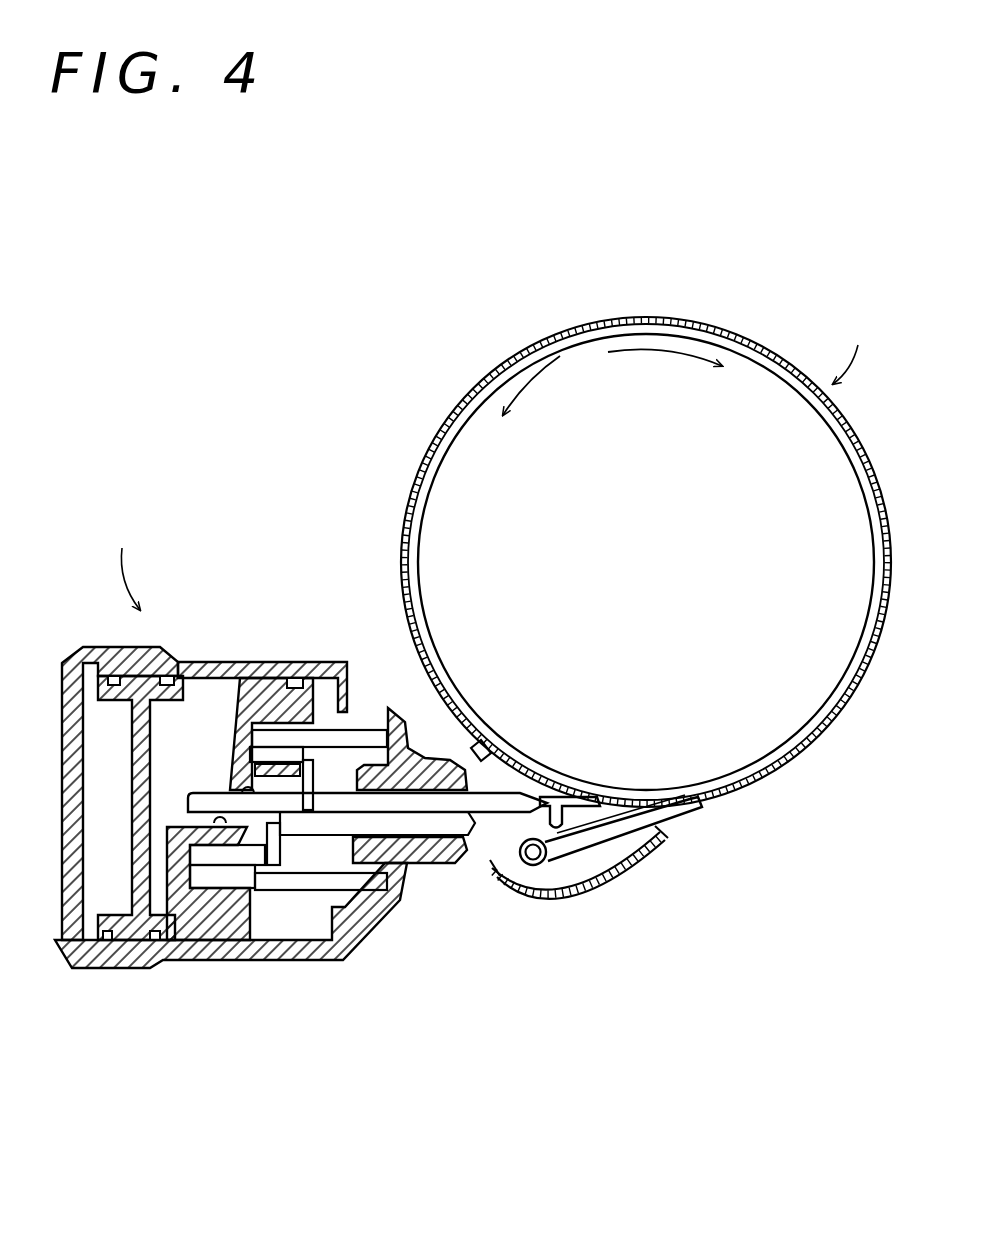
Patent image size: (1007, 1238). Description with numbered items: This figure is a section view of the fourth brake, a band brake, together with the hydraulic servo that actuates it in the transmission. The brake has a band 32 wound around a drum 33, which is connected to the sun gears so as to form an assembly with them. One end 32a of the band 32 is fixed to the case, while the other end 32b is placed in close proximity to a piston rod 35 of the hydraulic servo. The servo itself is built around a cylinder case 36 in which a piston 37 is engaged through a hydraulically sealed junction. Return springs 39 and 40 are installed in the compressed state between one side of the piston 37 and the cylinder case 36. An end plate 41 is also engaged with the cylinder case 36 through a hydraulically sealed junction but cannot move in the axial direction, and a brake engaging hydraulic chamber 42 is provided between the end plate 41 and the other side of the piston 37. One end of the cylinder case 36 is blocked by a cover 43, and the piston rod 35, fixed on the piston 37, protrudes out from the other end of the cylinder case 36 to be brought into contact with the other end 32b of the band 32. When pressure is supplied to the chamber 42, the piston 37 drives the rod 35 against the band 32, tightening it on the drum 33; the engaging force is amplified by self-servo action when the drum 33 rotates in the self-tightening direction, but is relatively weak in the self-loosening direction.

The band 32 is at (748, 782).
The one end of the band 32a is at (548, 862).
The other end of the band 32b is at (587, 797).
The drum 33 is at (838, 446).
The piston rod 35 is at (480, 806).
The cylinder case 36 is at (350, 963).
The piston 37 is at (220, 932).
The return spring 39 is at (258, 868).
The return spring 40 is at (360, 927).
The end plate 41 is at (135, 945).
The brake engaging hydraulic chamber 42 is at (200, 700).
The cover 43 is at (66, 922).